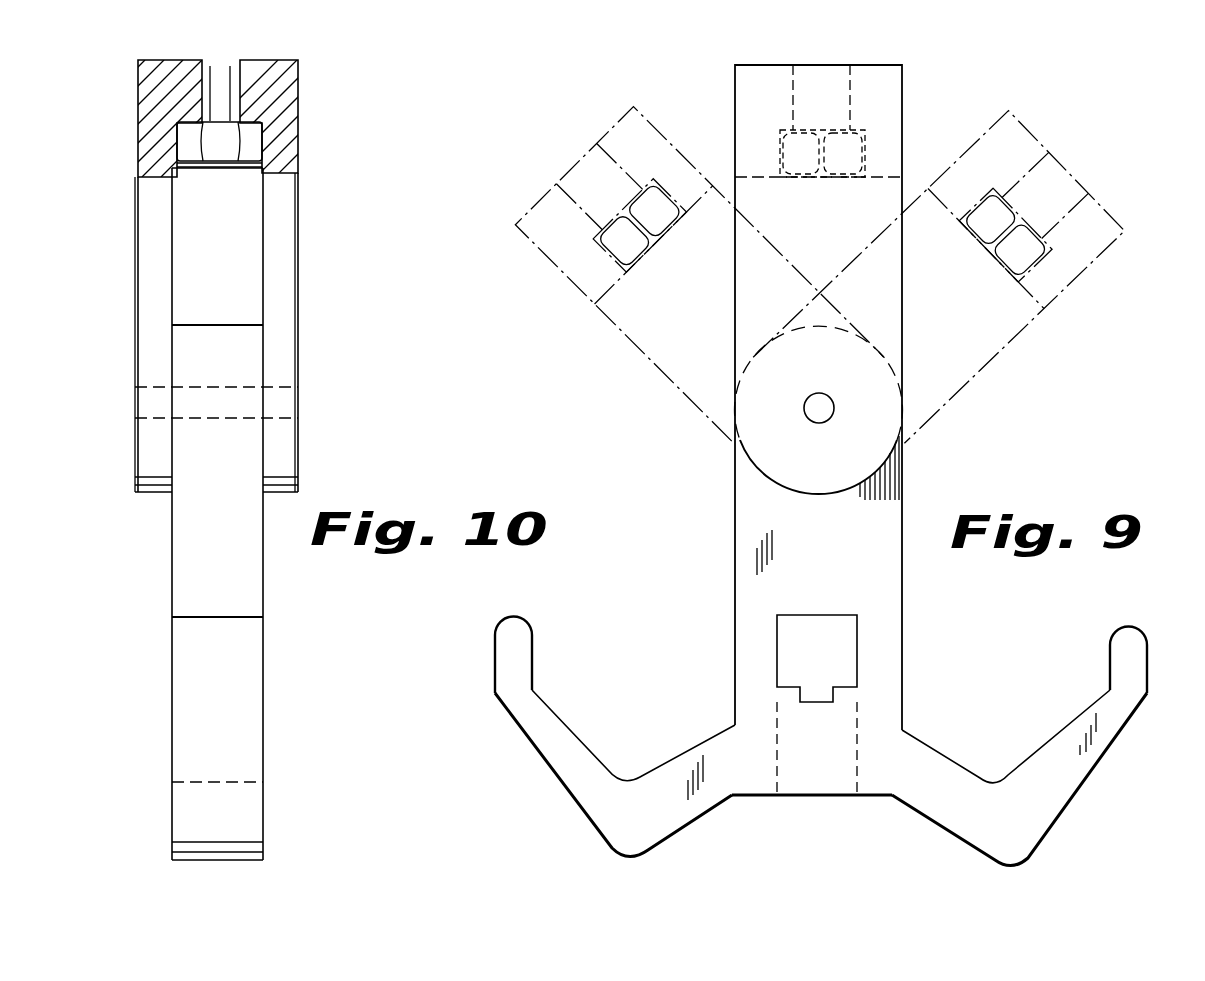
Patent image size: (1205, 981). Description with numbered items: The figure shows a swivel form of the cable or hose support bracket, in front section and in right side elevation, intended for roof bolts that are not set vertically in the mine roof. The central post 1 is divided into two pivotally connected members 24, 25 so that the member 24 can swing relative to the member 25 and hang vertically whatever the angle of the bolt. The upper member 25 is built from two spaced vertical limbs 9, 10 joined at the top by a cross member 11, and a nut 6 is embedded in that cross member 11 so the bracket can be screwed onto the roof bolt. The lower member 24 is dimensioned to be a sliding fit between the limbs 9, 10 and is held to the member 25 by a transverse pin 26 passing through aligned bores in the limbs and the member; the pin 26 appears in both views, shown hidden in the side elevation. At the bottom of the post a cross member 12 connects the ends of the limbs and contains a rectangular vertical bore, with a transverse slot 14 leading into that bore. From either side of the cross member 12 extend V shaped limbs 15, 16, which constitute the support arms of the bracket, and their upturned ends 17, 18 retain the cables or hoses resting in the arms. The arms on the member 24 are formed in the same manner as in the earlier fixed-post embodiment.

In FIG. 9, the central post 1 is at (933, 473).
In FIG. 10, the nut 6 is at (252, 139).
In FIG. 10, the vertical limb 9 is at (142, 250).
In FIG. 10, the vertical limb 10 is at (283, 243).
In FIG. 10, the cross member 11 is at (141, 62).
In FIG. 10, the cross member 12 is at (182, 862).
In FIG. 9, the cross member 12 is at (867, 795).
In FIG. 9, the transverse slot 14 is at (808, 690).
In FIG. 9, the V shaped limb 15 is at (548, 766).
In FIG. 10, the V shaped limb 16 is at (261, 688).
In FIG. 9, the V shaped limb 16 is at (1104, 746).
In FIG. 9, the upturned end 17 is at (520, 645).
In FIG. 9, the upturned end 18 is at (1125, 650).
In FIG. 9, the member 24 is at (733, 553).
In FIG. 9, the member 25 is at (742, 147).
In FIG. 10, the pivot pin 26 is at (148, 400).
In FIG. 9, the pivot pin 26 is at (812, 410).